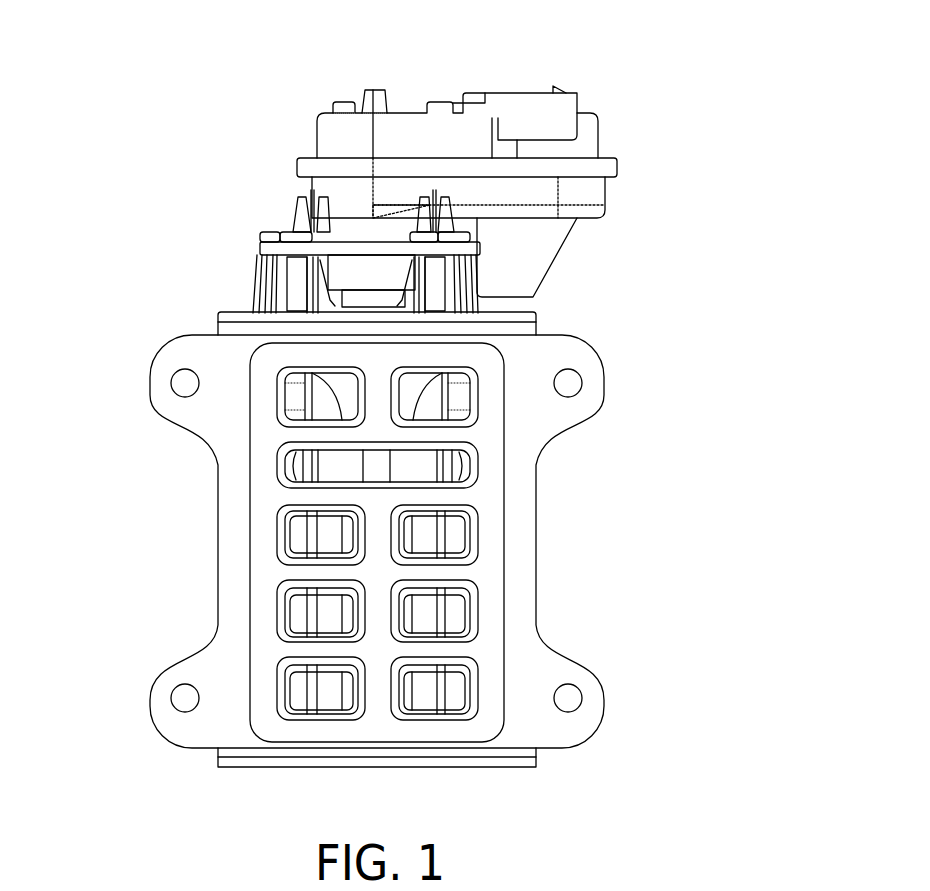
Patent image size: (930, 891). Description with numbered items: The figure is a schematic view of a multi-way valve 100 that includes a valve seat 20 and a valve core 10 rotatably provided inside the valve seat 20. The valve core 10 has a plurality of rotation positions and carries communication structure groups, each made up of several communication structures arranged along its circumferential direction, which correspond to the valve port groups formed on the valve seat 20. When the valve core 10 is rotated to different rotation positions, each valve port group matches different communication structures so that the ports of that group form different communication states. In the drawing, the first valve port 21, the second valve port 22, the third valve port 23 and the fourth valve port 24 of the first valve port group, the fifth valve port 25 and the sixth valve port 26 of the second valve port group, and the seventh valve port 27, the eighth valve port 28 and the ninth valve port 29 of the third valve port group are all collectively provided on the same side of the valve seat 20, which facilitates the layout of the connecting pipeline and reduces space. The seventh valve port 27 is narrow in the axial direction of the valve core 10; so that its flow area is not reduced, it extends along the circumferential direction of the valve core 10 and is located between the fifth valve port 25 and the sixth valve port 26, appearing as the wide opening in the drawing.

The multi-way valve 100 is at (617, 48).
The valve core 10 is at (340, 273).
The valve seat 20 is at (510, 330).
The first valve port 21 is at (452, 613).
The second valve port 22 is at (460, 690).
The third valve port 23 is at (298, 690).
The fourth valve port 24 is at (288, 607).
The fifth valve port 25 is at (470, 392).
The sixth valve port 26 is at (462, 533).
The seventh valve port 27 is at (478, 465).
The eighth valve port 28 is at (288, 395).
The ninth valve port 29 is at (288, 525).